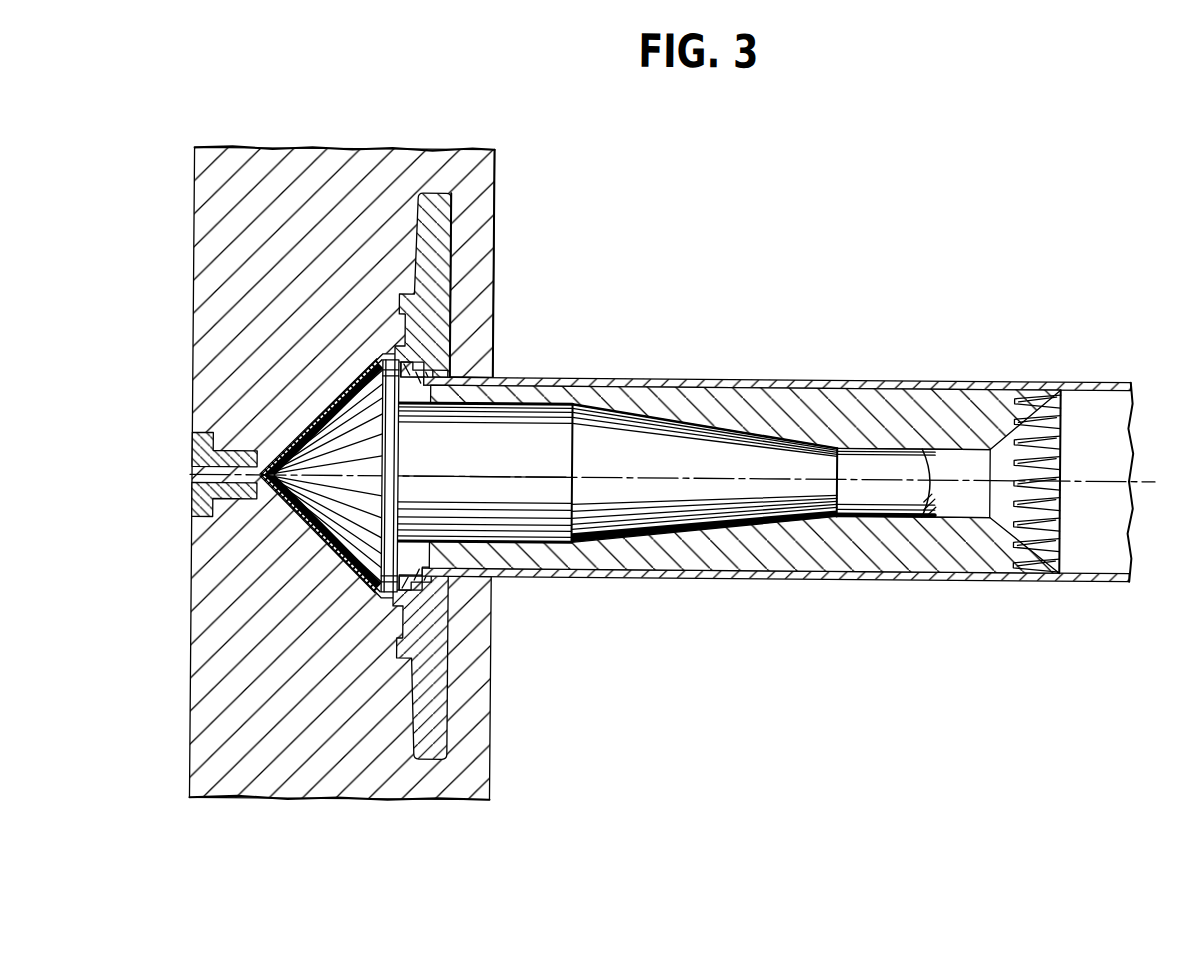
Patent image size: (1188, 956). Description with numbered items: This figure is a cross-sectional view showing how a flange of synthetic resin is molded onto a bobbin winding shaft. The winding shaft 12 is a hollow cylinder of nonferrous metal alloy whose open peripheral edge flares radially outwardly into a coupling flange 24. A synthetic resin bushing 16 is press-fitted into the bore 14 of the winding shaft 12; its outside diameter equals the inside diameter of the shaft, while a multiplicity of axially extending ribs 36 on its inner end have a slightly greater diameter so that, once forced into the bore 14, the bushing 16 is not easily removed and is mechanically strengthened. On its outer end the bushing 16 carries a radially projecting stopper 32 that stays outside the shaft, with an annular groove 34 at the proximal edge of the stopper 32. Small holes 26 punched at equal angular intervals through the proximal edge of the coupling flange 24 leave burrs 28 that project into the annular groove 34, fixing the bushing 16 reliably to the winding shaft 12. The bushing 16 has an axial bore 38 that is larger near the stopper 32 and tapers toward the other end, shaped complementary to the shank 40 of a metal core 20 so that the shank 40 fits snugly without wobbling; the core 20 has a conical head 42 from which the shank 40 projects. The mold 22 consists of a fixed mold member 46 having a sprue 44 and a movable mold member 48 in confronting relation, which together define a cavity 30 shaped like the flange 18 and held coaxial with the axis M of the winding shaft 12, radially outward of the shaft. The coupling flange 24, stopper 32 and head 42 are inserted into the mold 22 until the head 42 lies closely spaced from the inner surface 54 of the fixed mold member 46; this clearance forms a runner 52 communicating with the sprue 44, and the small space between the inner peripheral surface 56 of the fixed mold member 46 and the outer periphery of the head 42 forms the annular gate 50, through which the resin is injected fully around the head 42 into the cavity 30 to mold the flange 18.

The winding shaft 12 is at (703, 378).
The bore 14 is at (1108, 448).
The bushing 16 is at (830, 404).
The flange 18 is at (433, 239).
The core 20 is at (538, 501).
The mold 22 is at (191, 242).
The coupling flange 24 is at (440, 352).
The small holes 26 is at (430, 372).
The burrs 28 is at (485, 374).
The cavity 30 is at (417, 227).
The stopper 32 is at (460, 287).
The annular groove 34 is at (492, 628).
The ribs 36 is at (1038, 442).
The axial bore 38 is at (743, 431).
The shank 40 is at (725, 494).
The conical head 42 is at (340, 459).
The sprue 44 is at (190, 501).
The fixed mold member 46 is at (283, 216).
The movable mold member 48 is at (468, 730).
The annular gate 50 is at (385, 592).
The runner 52 is at (323, 422).
The inner surface 54 is at (300, 438).
The inner peripheral surface 56 is at (393, 359).
The axis M is at (656, 483).